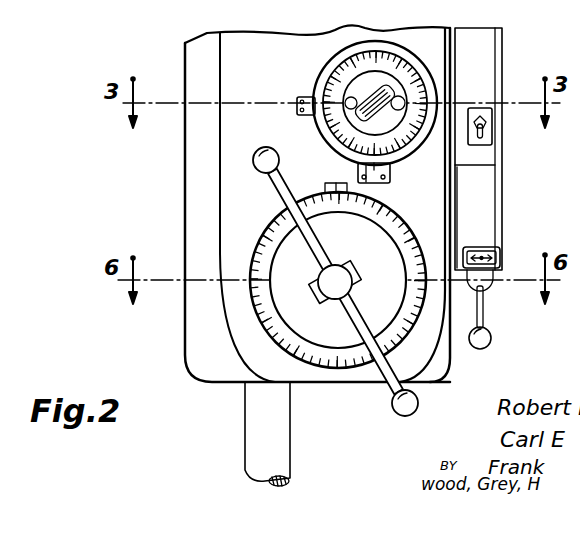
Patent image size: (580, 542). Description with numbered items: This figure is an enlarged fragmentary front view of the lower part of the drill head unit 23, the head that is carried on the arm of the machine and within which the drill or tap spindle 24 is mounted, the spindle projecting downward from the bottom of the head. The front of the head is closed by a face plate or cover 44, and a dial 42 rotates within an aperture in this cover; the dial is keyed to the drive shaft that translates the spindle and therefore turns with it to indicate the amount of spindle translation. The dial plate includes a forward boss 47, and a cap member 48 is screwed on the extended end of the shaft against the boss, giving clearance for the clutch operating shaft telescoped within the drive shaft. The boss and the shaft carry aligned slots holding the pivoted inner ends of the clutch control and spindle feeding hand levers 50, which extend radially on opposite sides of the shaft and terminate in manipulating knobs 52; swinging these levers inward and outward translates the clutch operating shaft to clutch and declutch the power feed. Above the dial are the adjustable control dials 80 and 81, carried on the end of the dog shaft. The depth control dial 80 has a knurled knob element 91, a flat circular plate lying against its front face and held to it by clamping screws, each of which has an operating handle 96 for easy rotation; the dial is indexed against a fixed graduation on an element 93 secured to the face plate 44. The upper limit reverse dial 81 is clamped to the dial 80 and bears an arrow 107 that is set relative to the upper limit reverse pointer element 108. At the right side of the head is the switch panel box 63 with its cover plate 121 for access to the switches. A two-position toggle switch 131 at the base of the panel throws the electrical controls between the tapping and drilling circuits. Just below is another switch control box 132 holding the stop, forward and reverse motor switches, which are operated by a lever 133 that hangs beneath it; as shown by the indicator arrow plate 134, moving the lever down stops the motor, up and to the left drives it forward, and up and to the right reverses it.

The drill head unit 23 is at (200, 352).
The drill or tap spindle 24 is at (279, 452).
The dial 42 is at (272, 240).
The face plate or cover 44 is at (250, 343).
The forward boss 47 is at (352, 297).
The cap member 48 is at (352, 283).
The clutch control and spindle feeding hand levers 50 is at (334, 242).
The manipulating knobs 52 is at (262, 170).
The switch panel box 63 is at (496, 82).
The depth control dial 80 is at (362, 74).
The upper limit reverse dial 81 is at (340, 64).
The knurled knob element 91 is at (355, 118).
The index element 93 is at (304, 97).
The operating handle 96 is at (352, 103).
The arrow 107 is at (358, 166).
The upper limit reverse pointer element 108 is at (388, 170).
The cover plate 121 is at (500, 152).
The switch 131 is at (486, 127).
The switch control box 132 is at (480, 215).
The lever 133 is at (484, 323).
The indicator arrow plate 134 is at (492, 248).